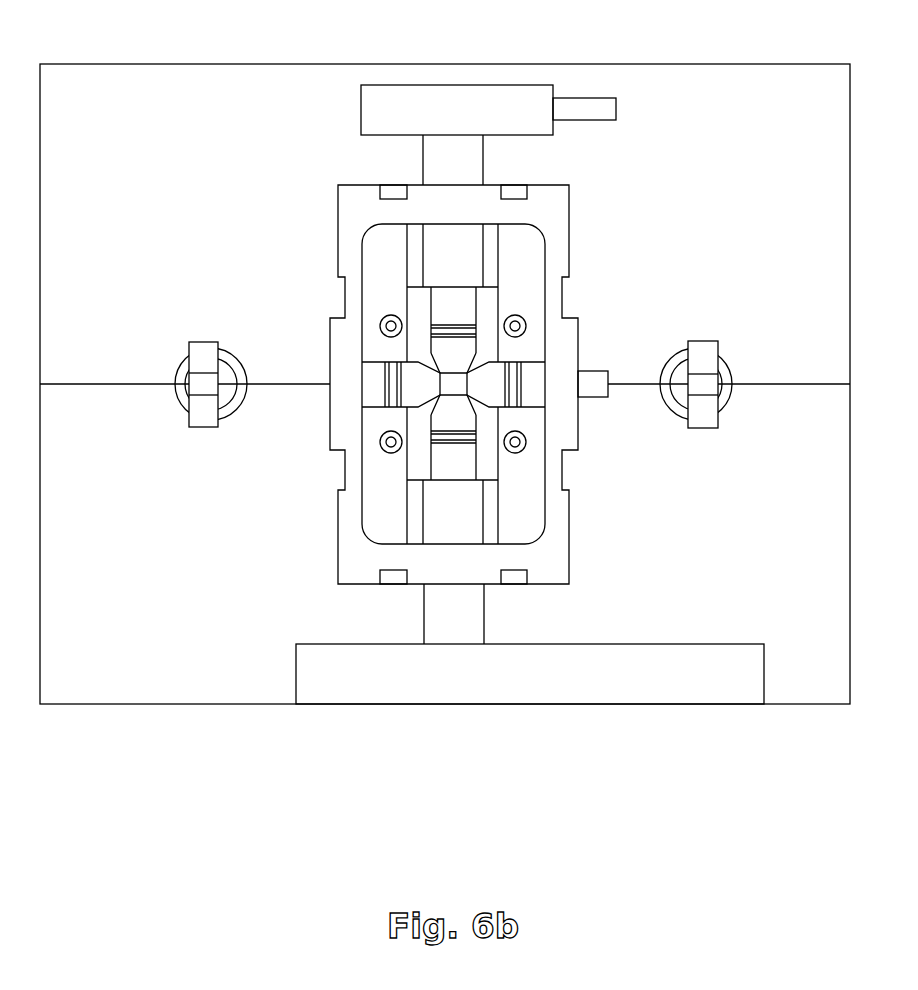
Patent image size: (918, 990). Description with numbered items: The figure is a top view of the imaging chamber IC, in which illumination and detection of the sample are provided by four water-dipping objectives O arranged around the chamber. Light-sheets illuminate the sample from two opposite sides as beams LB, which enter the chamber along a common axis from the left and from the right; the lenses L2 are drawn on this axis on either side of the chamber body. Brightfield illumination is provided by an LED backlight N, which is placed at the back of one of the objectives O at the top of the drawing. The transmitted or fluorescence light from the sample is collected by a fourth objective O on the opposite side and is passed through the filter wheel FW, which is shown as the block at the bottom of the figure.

The LED backlight N is at (401, 100).
The imaging chamber IC is at (228, 514).
The water-dipping objective O is at (380, 373).
The beam LB is at (105, 382).
The lens L2 is at (204, 352).
The filter wheel FW is at (349, 684).